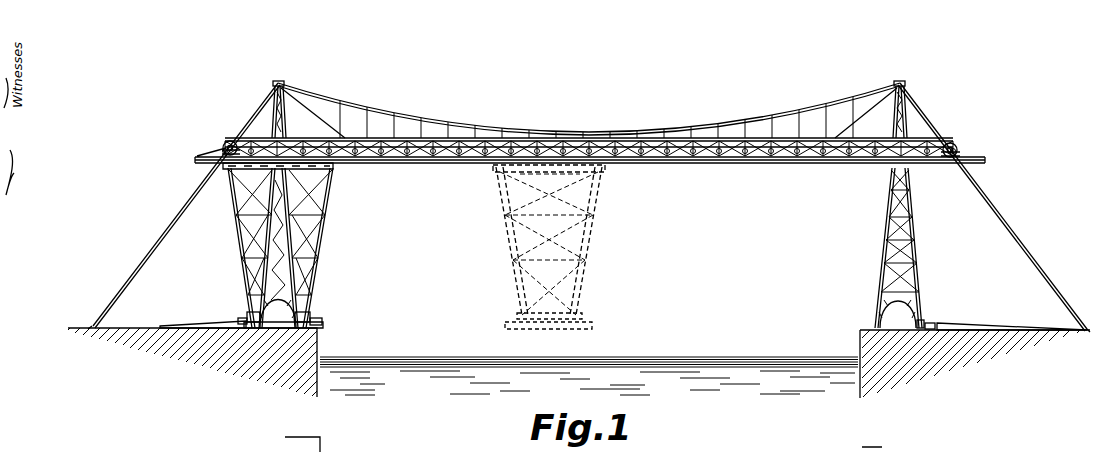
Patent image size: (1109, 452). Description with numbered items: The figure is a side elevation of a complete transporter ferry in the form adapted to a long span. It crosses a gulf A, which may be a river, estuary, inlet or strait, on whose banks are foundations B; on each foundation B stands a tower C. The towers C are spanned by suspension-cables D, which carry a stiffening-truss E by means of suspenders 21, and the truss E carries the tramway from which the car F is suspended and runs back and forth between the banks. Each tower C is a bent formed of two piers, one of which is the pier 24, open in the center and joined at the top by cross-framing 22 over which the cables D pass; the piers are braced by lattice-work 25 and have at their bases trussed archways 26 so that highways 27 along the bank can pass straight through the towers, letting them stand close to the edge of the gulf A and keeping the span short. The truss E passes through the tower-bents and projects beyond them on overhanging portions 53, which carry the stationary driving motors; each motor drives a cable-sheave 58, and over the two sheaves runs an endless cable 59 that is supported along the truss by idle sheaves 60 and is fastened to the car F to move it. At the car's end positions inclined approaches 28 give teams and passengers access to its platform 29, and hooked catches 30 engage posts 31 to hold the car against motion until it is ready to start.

The suspenders 21 is at (357, 120).
The cross-framing 22 is at (284, 84).
The pier 24 is at (300, 290).
The lattice-work 25 is at (905, 220).
The trussed archways 26 is at (921, 320).
The highways 27 is at (278, 330).
The inclined approaches 28 is at (247, 322).
The platform 29 is at (551, 330).
The hooked catches 30 is at (253, 316).
The posts 31 is at (250, 323).
The overhanging portions 53 is at (225, 151).
The cable-sheave 58 is at (230, 142).
The endless cable 59 is at (404, 158).
The idle sheaves 60 is at (693, 155).
The gulf A is at (589, 362).
The foundations B is at (860, 340).
The tower C is at (278, 120).
The suspension-cables D is at (166, 233).
The stiffening-truss E is at (745, 162).
The car F is at (318, 247).